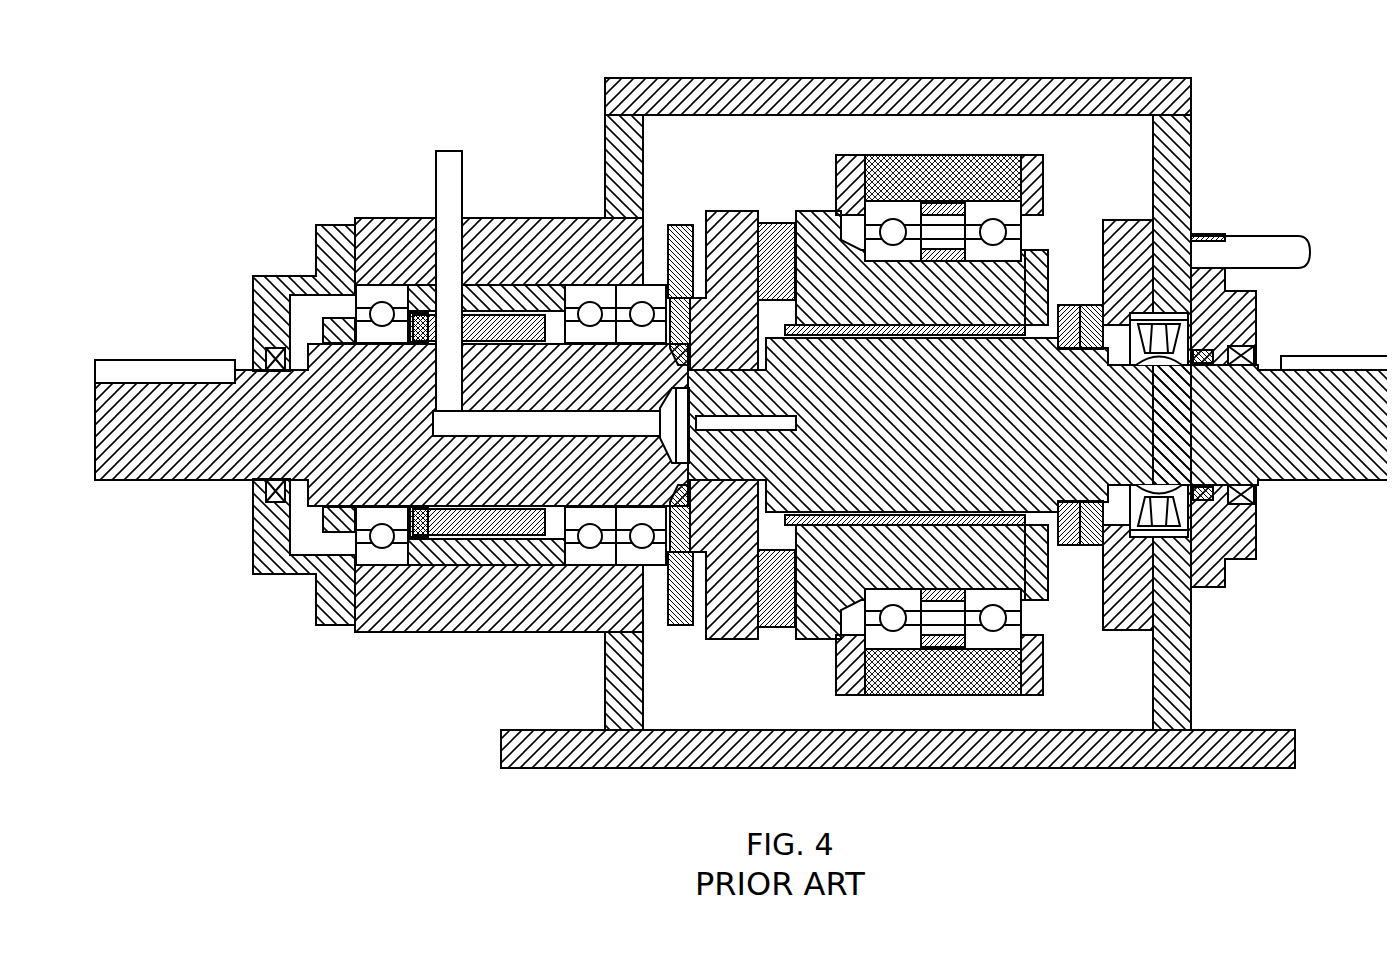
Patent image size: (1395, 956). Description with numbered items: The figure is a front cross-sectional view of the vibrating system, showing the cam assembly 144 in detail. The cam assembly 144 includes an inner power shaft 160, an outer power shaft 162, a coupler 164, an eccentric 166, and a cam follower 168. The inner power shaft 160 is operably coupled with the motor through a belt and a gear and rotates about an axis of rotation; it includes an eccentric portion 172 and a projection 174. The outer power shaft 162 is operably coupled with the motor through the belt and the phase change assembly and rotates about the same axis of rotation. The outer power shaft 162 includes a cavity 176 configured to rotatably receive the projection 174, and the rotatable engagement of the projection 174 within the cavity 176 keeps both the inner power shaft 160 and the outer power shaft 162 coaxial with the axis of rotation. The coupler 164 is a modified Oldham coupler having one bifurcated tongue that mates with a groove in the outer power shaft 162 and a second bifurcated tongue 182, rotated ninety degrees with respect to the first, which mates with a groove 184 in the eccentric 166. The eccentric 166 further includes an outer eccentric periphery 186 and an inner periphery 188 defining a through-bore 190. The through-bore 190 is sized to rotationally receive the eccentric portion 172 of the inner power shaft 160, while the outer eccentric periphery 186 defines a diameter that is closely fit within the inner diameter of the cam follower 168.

The cam assembly 144 is at (286, 110).
The inner power shaft 160 is at (1305, 350).
The outer power shaft 162 is at (195, 352).
The coupler 164 is at (765, 620).
The eccentric 166 is at (805, 632).
The cam follower 168 is at (958, 147).
The eccentric portion 172 is at (745, 345).
The projection 174 is at (723, 632).
The cavity 176 is at (665, 618).
The second bifurcated tongue 182 is at (753, 213).
The groove 184 is at (782, 204).
The outer eccentric periphery 186 is at (968, 217).
The inner periphery 188 is at (1056, 325).
The through-bore 190 is at (1068, 540).